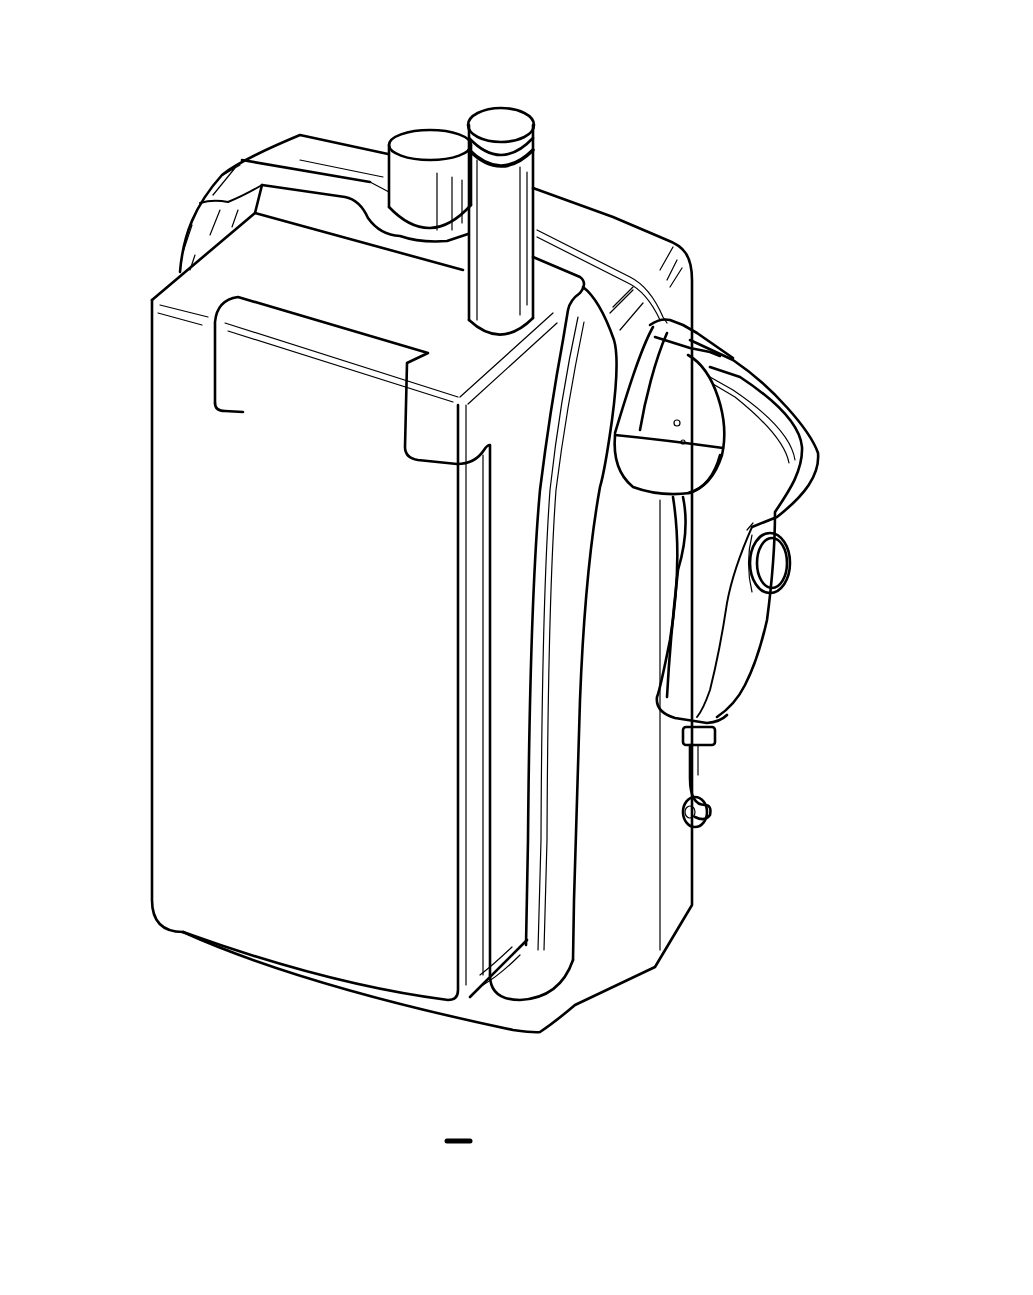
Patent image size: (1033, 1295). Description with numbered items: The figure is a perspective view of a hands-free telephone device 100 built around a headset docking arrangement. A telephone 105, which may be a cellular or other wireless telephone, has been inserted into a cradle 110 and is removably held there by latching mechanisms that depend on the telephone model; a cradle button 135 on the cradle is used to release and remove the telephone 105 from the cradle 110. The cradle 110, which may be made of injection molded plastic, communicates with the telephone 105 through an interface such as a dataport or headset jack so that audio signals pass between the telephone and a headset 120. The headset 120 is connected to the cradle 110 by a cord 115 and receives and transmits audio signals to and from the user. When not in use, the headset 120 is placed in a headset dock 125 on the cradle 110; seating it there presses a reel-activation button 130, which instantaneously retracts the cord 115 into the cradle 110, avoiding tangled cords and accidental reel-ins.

The hands-free telephone device 100 is at (588, 48).
The telephone 105 is at (173, 675).
The cradle 110 is at (627, 918).
The cord 115 is at (703, 800).
The headset 120 is at (797, 407).
The headset dock 125 is at (680, 475).
The reel-activation button 130 is at (697, 328).
The cradle button 135 is at (410, 178).